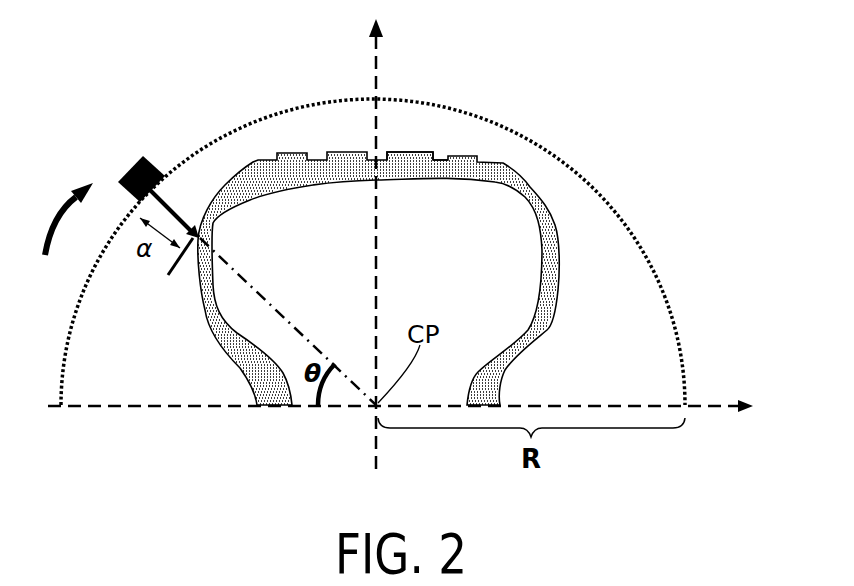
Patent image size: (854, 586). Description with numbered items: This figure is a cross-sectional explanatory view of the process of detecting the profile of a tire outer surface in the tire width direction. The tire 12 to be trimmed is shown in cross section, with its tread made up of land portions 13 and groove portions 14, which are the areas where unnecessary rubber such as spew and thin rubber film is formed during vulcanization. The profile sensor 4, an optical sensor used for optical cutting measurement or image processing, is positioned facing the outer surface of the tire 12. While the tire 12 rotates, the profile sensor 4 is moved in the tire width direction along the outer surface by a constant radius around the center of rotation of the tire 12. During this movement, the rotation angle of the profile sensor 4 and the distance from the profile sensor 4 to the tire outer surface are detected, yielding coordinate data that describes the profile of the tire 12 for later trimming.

The profile sensor 4 is at (150, 160).
The tire 12 is at (560, 320).
The land portion 13 is at (413, 150).
The groove portion 14 is at (440, 158).